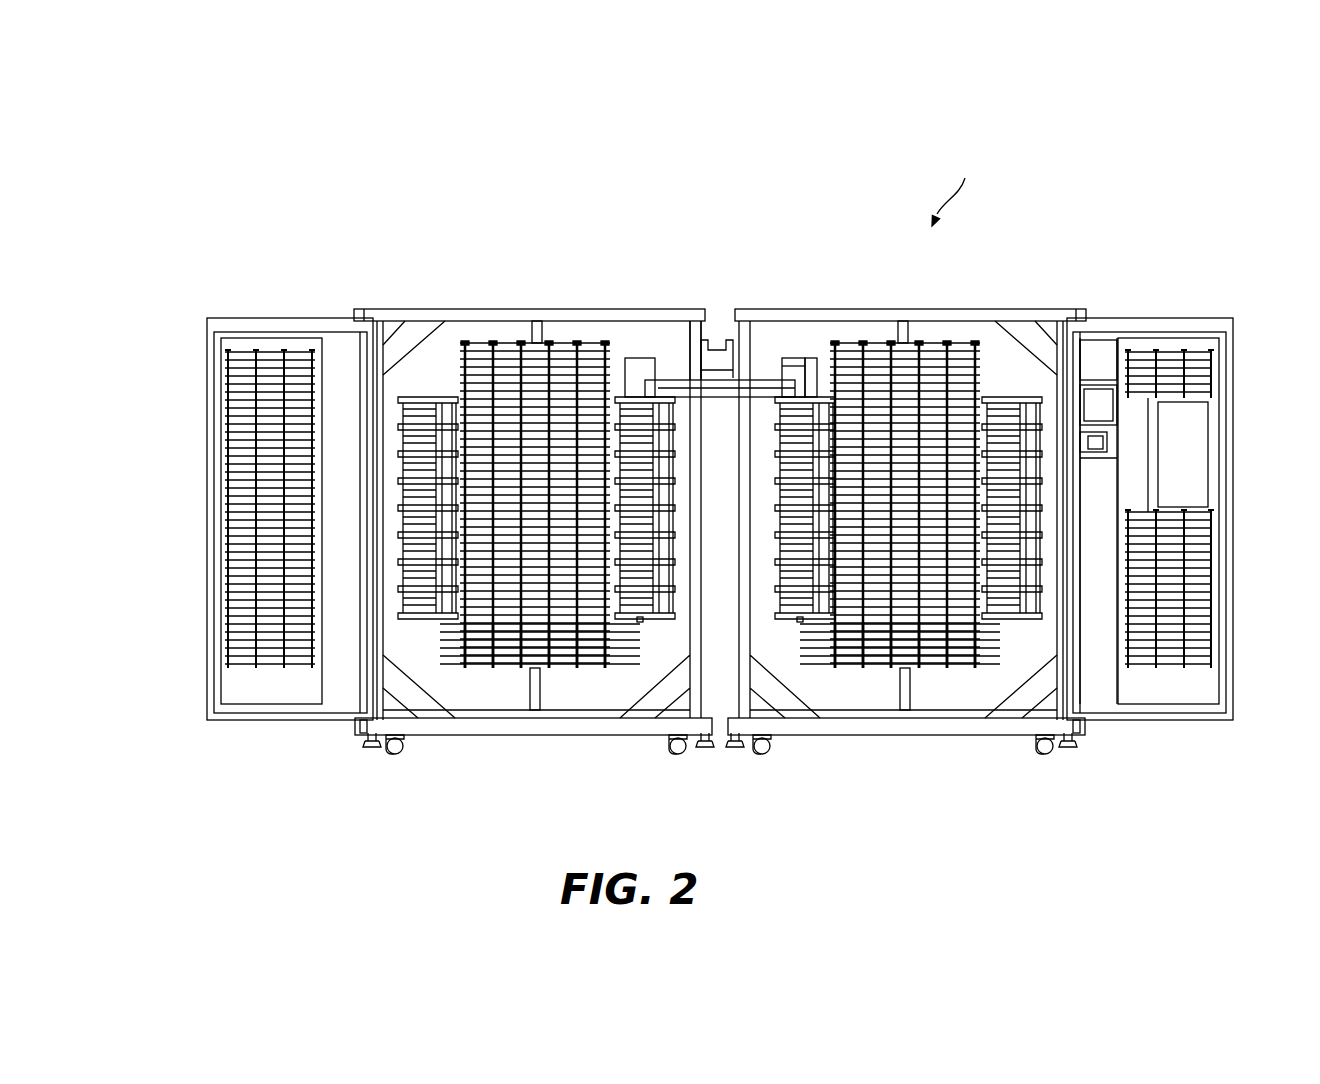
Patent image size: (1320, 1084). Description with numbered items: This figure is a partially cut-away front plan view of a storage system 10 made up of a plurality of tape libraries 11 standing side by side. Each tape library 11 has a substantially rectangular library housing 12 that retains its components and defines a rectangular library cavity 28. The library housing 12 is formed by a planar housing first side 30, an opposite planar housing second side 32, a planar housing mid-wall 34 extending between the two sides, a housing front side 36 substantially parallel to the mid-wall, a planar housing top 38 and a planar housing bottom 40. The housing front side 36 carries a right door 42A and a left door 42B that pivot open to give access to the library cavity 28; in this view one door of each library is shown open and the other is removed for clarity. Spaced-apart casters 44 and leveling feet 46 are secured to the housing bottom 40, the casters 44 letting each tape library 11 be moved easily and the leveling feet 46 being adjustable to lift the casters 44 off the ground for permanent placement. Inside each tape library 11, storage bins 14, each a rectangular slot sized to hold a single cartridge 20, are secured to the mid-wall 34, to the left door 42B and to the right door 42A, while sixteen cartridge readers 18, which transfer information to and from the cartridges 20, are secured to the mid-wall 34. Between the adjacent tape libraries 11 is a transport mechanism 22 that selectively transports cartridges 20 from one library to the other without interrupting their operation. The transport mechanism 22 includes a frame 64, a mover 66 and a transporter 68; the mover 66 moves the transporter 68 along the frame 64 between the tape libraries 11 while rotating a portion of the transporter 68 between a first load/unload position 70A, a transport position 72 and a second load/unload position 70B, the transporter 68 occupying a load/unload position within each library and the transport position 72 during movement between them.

The storage system 10 is at (955, 172).
The tape library 11 is at (370, 300).
The library housing 12 is at (488, 302).
The storage bin 14 is at (283, 350).
The cartridge reader 18 is at (433, 400).
The cartridge 20 is at (233, 354).
The transport mechanism 22 is at (671, 364).
The library cavity 28 is at (474, 690).
The housing first side 30 is at (352, 312).
The housing second side 32 is at (1090, 315).
The housing mid-wall 34 is at (586, 690).
The housing front side 36 is at (205, 518).
The housing top 38 is at (570, 318).
The housing bottom 40 is at (535, 737).
The right door 42A is at (1232, 530).
The left door 42B is at (212, 592).
The caster 44 is at (397, 757).
The leveling foot 46 is at (372, 742).
The frame 64 is at (697, 332).
The mover 66 is at (813, 352).
The transporter 68 is at (790, 344).
The first load/unload position 70A is at (787, 346).
The second load/unload position 70B is at (632, 349).
The transport position 72 is at (719, 326).